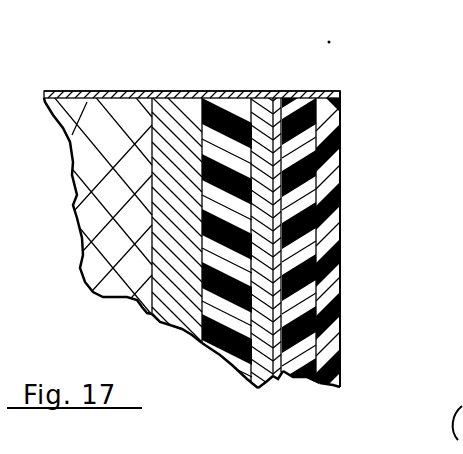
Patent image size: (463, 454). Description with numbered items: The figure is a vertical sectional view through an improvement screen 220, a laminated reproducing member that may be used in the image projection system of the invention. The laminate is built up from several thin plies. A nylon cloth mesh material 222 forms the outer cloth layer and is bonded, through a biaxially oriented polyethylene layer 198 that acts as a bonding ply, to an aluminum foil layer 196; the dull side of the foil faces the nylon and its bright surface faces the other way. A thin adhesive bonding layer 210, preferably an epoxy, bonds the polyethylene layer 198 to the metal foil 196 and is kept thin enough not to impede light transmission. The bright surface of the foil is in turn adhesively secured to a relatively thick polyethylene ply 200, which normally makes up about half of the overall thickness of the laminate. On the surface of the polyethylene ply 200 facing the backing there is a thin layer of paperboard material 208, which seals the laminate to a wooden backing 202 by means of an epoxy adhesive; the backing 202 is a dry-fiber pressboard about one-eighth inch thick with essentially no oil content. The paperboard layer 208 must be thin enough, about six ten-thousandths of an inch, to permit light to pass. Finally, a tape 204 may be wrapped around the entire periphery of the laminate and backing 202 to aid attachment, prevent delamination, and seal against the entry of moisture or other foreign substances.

The aluminum foil layer 196 is at (259, 97).
The polyethylene layer 198 is at (303, 365).
The polyethylene ply 200 is at (223, 107).
The wooden backing 202 is at (99, 123).
The tape 204 is at (73, 93).
The paperboard layer 208 is at (166, 112).
The adhesive bonding layer 210 is at (279, 362).
The improvement screen 220 is at (348, 173).
The nylon cloth mesh material 222 is at (346, 214).